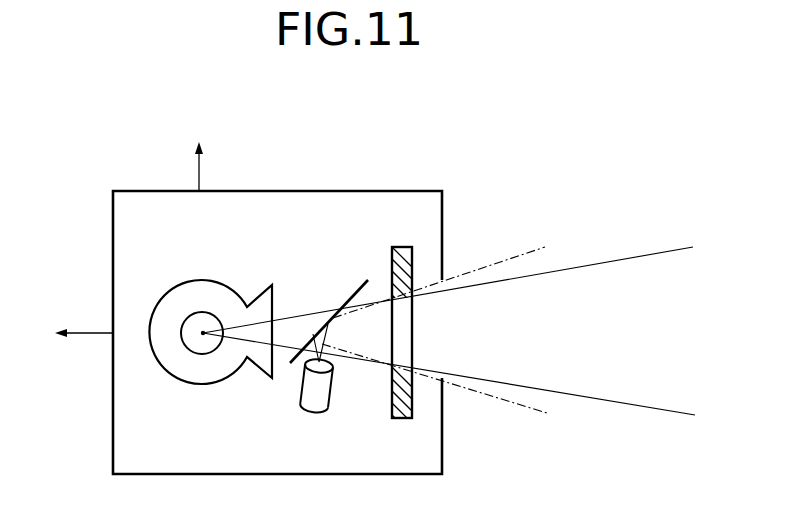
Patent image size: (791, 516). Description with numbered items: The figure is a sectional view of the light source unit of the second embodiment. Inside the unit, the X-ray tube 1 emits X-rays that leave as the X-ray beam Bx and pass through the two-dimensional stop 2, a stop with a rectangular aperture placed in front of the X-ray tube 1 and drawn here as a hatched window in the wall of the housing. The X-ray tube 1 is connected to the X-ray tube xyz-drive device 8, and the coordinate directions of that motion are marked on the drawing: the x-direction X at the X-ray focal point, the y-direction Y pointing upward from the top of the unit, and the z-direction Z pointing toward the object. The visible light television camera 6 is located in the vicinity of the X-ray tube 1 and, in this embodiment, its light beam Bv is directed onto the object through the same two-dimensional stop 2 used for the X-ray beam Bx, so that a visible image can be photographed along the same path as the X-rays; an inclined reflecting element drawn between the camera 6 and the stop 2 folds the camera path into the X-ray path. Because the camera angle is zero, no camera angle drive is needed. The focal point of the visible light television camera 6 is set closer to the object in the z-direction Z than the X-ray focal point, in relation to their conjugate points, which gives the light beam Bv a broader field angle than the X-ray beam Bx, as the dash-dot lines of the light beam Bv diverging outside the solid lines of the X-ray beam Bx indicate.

The X-ray tube 1 is at (210, 332).
The two-dimensional stop 2 is at (411, 247).
The visible light television camera 6 is at (322, 407).
The X-ray tube xyz-drive device 8 is at (337, 191).
The X-ray beam Bx is at (638, 258).
The light beam Bv is at (520, 257).
The x-direction X is at (203, 333).
The y-direction Y is at (208, 156).
The z-direction Z is at (78, 350).